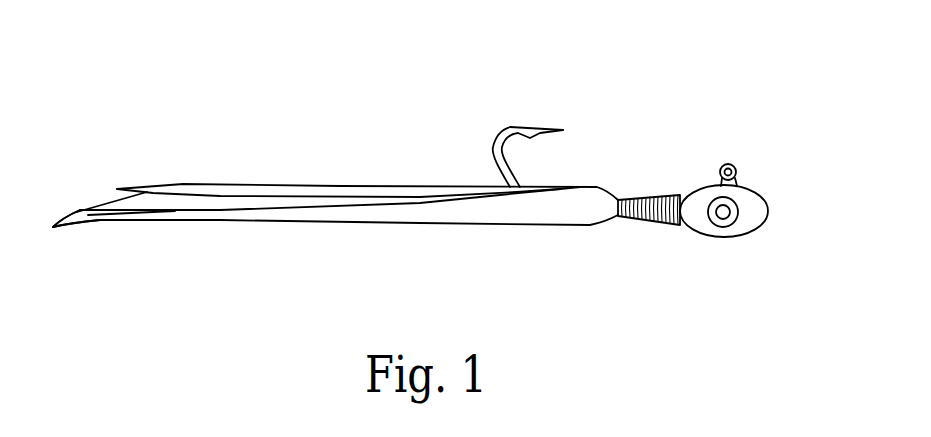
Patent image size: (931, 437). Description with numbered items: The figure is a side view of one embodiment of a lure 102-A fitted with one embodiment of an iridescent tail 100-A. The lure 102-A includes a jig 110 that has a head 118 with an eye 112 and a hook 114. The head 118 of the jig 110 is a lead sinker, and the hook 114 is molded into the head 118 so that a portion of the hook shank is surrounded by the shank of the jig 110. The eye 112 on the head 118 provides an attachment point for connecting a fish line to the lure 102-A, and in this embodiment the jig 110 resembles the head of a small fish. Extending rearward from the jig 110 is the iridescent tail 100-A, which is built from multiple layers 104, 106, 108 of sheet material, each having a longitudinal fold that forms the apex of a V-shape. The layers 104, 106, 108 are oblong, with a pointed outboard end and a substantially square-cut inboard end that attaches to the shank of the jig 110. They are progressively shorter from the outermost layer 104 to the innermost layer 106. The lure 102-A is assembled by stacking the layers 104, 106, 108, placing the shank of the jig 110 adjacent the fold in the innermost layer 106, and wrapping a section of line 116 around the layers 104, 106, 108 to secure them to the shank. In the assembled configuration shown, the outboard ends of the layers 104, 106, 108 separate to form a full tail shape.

The iridescent tail 100-A is at (106, 271).
The lure 102-A is at (744, 50).
The outermost layer 104 is at (357, 225).
The innermost layer 106 is at (273, 185).
The layer 108 is at (108, 203).
The jig 110 is at (713, 185).
The eye 112 is at (733, 165).
The hook 114 is at (512, 125).
The line 116 is at (650, 193).
The head 118 is at (717, 237).